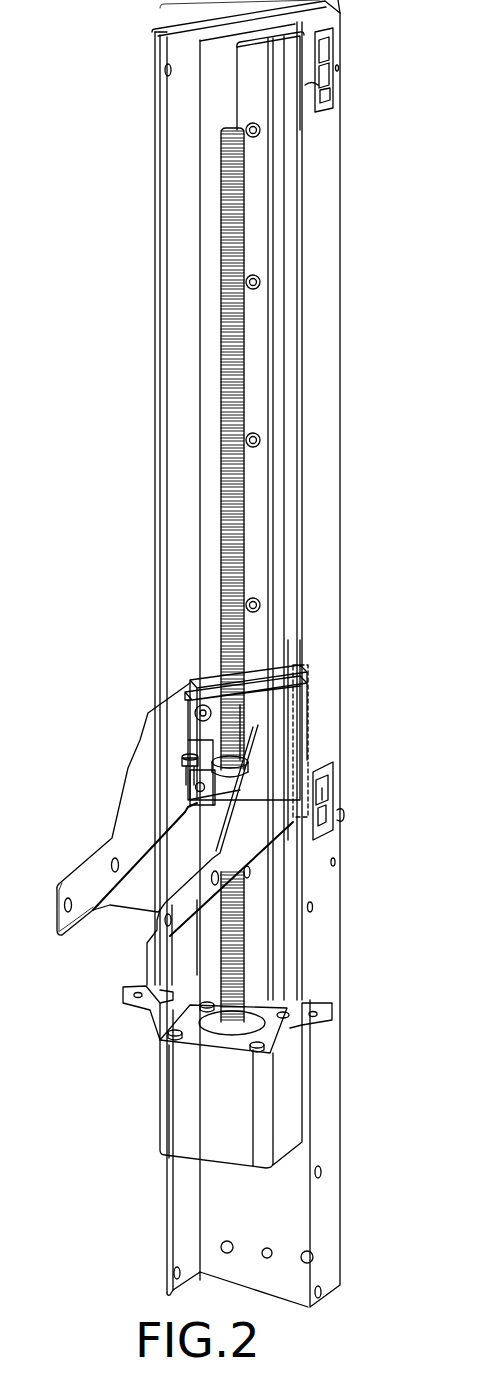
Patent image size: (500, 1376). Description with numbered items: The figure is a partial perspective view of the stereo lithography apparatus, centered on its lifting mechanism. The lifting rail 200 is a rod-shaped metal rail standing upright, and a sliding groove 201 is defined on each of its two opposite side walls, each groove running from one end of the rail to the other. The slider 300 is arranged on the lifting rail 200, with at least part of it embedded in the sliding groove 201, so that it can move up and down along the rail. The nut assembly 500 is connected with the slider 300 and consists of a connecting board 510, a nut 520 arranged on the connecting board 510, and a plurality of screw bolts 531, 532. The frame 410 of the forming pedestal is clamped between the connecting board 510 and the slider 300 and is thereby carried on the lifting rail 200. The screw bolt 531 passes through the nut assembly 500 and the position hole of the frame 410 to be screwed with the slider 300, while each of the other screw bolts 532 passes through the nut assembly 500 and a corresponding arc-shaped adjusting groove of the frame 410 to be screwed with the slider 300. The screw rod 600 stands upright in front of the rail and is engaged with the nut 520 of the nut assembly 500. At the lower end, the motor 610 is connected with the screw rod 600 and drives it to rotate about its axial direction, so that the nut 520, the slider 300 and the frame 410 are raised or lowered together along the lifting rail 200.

The lifting rail 200 is at (250, 87).
The sliding groove 201 is at (284, 97).
The screw rod 600 is at (222, 235).
The slider 300 is at (215, 660).
The screw bolt 531 is at (217, 698).
The screw bolt 532 is at (195, 713).
The connecting board 510 is at (216, 706).
The nut 520 is at (216, 792).
The nut assembly 500 is at (173, 805).
The frame 410 is at (245, 837).
The motor 610 is at (182, 1100).